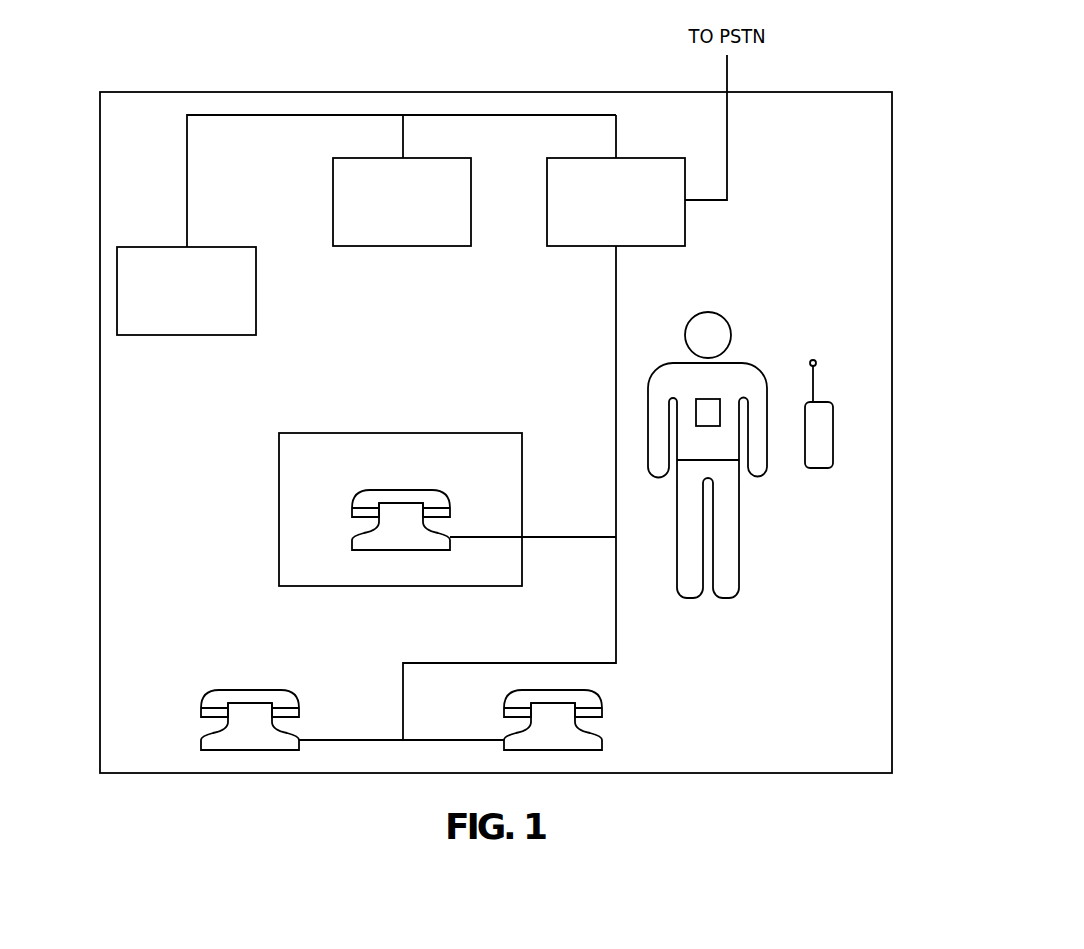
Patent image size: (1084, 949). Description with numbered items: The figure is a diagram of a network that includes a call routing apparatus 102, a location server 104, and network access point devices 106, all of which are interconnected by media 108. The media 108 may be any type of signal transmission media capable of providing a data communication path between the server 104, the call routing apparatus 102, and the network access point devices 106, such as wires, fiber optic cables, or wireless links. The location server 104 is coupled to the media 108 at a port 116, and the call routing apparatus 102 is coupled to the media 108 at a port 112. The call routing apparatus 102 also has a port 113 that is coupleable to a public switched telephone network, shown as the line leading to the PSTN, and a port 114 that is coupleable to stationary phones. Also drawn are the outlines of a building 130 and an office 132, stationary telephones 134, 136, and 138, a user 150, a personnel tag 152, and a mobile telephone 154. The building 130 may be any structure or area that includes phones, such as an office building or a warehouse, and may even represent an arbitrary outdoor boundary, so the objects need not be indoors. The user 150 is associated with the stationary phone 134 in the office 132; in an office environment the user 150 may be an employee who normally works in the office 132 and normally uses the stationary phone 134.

The call routing apparatus 102 is at (546, 202).
The location server 104 is at (332, 202).
The network access point devices 106 is at (257, 291).
The media 108 is at (537, 117).
The port 112 is at (618, 156).
The port 113 is at (690, 203).
The port 114 is at (614, 248).
The port 116 is at (408, 152).
The building 130 is at (495, 91).
The office 132 is at (400, 432).
The stationary telephone 134 is at (350, 541).
The stationary telephone 136 is at (199, 740).
The stationary telephone 138 is at (603, 740).
The user 150 is at (740, 515).
The personnel tag 152 is at (708, 399).
The mobile telephone 154 is at (835, 433).